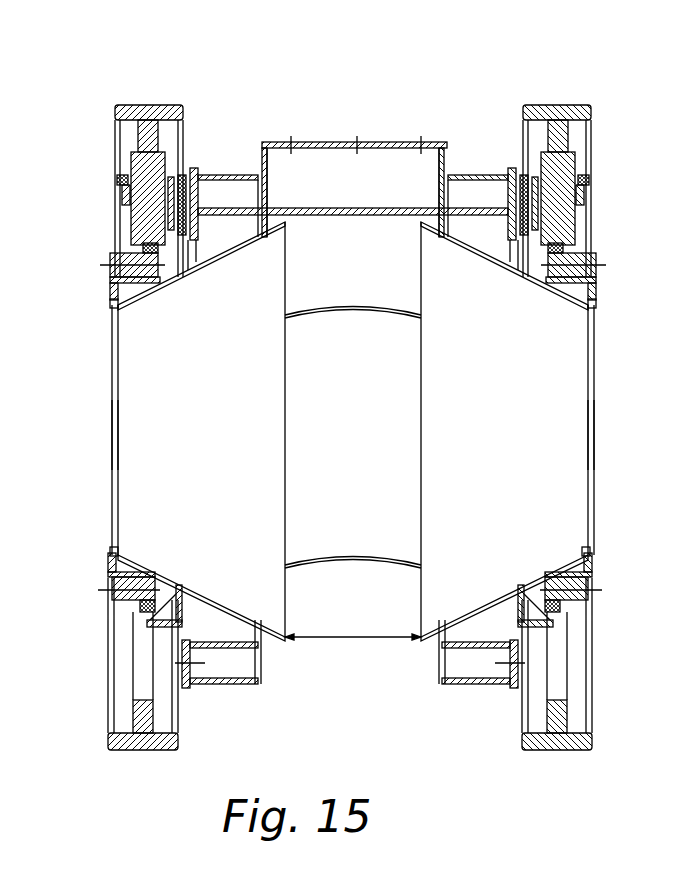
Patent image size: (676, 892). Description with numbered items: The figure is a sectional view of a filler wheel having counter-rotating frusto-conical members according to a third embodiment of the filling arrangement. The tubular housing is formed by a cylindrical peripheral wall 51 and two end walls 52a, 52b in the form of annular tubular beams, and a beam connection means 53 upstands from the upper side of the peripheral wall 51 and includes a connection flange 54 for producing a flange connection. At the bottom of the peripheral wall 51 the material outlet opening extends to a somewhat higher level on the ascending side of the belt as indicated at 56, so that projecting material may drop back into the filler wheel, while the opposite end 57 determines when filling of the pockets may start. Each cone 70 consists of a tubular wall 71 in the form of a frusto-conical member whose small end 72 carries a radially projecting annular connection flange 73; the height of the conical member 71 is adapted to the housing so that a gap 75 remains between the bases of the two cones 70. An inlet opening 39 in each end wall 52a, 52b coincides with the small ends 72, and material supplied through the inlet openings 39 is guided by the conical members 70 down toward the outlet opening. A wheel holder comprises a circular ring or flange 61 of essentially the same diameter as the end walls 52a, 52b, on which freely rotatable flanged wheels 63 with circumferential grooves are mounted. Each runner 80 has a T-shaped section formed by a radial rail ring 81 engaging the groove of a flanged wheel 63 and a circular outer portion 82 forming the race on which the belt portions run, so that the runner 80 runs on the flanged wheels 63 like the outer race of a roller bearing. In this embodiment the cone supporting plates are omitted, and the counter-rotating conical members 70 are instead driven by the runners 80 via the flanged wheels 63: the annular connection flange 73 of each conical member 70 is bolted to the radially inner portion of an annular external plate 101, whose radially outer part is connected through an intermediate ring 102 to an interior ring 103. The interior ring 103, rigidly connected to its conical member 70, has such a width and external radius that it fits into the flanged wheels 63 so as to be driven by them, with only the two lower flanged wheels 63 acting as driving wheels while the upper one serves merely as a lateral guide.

The inlet opening 39 is at (113, 477).
The cylindrical peripheral wall 51 is at (336, 234).
The end wall 52a is at (213, 686).
The end wall 52b is at (470, 688).
The beam connection means 53 is at (263, 157).
The connection flange 54 is at (366, 141).
The higher level of outlet opening on ascending side 56 is at (353, 429).
The end opposite to the outlet opening 57 is at (357, 562).
The circular ring or flange 61 is at (191, 167).
The flanged wheel 63 is at (131, 160).
The cone 70 is at (353, 518).
The tubular wall 71 is at (207, 262).
The small end 72 is at (130, 388).
The annular connection flange 73 is at (110, 312).
The gap 75 is at (336, 639).
The runner 80 is at (128, 750).
The radial rail ring 81 is at (135, 716).
The circular outer portion 82 is at (146, 105).
The annular external plate 101 is at (110, 290).
The intermediate ring 102 is at (120, 258).
The interior ring 103 is at (143, 247).